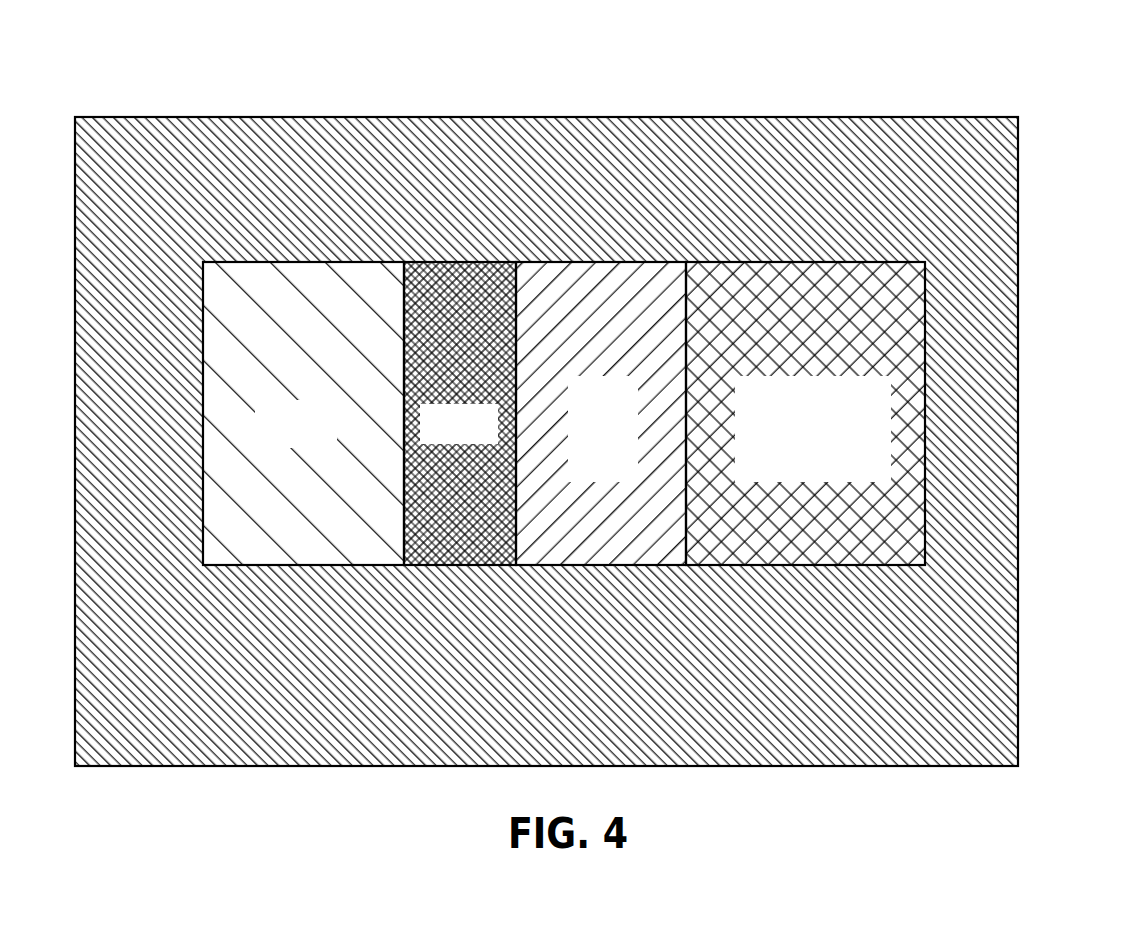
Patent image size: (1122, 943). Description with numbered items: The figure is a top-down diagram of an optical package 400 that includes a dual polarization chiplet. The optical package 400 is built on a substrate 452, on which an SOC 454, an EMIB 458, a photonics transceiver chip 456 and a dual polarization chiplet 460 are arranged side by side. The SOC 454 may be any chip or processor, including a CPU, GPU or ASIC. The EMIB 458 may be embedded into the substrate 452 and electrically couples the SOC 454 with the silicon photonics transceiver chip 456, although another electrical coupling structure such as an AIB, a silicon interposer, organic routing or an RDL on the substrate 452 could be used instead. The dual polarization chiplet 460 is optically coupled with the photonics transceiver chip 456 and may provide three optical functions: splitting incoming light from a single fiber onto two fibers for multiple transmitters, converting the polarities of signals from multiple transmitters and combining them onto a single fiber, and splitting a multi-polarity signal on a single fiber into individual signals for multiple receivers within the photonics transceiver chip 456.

The optical package 400 is at (982, 58).
The substrate 452 is at (980, 190).
The SOC 454 is at (265, 295).
The photonics transceiver chip 456 is at (622, 290).
The EMIB 458 is at (468, 290).
The dual polarization chiplet 460 is at (813, 290).